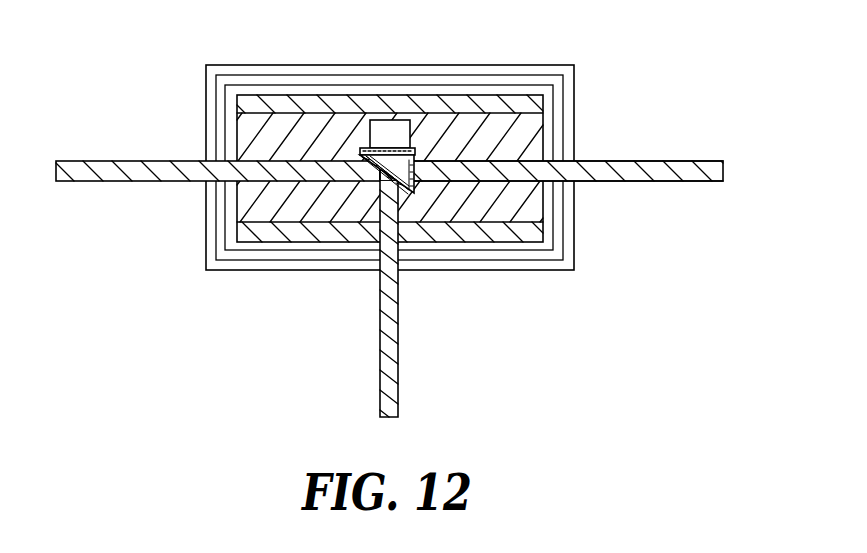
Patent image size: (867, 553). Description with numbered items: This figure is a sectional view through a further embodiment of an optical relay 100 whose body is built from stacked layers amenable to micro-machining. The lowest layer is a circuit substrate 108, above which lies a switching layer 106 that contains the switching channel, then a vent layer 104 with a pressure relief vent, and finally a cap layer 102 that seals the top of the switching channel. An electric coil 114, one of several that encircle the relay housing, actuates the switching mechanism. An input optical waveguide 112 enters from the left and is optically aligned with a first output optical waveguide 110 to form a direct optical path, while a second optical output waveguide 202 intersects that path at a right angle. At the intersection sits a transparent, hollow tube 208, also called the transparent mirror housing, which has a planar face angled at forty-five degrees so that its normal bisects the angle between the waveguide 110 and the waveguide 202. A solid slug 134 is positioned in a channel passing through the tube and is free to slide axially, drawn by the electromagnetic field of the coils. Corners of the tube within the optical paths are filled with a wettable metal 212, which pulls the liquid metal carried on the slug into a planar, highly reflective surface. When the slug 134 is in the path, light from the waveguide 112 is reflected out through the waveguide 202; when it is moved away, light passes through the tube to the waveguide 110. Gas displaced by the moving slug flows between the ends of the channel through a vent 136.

The optical relay 100 is at (136, 53).
The cap layer 102 is at (258, 105).
The vent layer 104 is at (517, 127).
The switching layer 106 is at (253, 188).
The circuit substrate 108 is at (524, 232).
The first output optical waveguide 110 is at (688, 160).
The input optical waveguide 112 is at (70, 161).
The electric coil 114 is at (576, 80).
The solid slug 134 is at (384, 182).
The vent 136 is at (396, 134).
The second optical output waveguide 202 is at (380, 315).
The transparent, hollow tube 208 is at (404, 193).
The wettable metal 212 is at (358, 149).